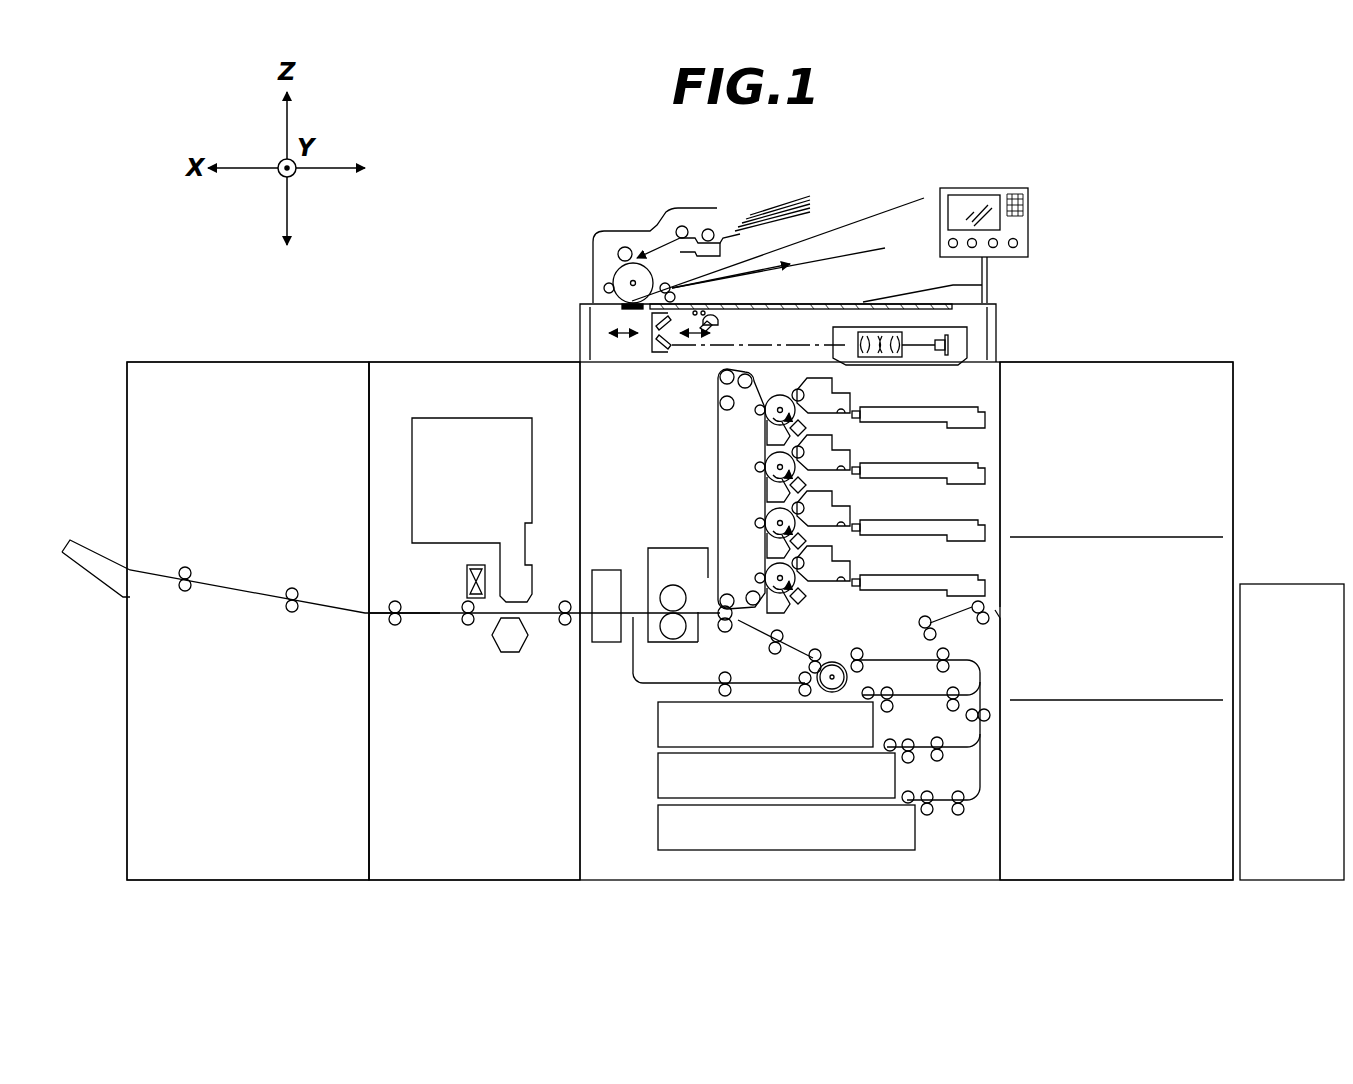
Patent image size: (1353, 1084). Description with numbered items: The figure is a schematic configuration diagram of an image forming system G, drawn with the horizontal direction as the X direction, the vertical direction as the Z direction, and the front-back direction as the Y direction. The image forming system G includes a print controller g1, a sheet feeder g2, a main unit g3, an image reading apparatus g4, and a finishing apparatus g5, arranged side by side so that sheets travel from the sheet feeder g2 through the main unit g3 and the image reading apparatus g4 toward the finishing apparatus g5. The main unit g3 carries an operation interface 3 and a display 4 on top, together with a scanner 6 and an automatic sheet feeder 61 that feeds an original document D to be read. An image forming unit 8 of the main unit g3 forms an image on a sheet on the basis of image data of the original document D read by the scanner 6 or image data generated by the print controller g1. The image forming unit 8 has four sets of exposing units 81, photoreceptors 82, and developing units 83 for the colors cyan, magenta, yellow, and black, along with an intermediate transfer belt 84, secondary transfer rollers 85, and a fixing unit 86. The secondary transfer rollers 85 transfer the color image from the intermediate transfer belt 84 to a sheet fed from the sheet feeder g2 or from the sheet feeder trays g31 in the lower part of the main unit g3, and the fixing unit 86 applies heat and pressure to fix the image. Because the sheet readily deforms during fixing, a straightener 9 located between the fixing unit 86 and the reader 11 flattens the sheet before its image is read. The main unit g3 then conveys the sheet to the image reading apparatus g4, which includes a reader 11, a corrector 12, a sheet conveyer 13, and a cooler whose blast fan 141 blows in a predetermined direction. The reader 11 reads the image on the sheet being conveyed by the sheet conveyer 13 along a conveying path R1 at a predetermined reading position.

The image forming system G is at (1030, 130).
The print controller g1 is at (1300, 582).
The sheet feeder g2 is at (1195, 360).
The main unit g3 is at (562, 332).
The image reading apparatus g4 is at (405, 360).
The finishing apparatus g5 is at (165, 360).
The sheet feeder trays g31 is at (737, 857).
The operation interface 3 is at (1028, 217).
The display 4 is at (962, 208).
The scanner 6 is at (598, 333).
The automatic sheet feeder 61 is at (924, 198).
The original document D is at (778, 216).
The image forming unit 8 is at (645, 430).
The straightener 9 is at (608, 570).
The reader 11 is at (466, 432).
The corrector 12 is at (508, 653).
The sheet conveyer 13 is at (437, 628).
The blast fan 141 is at (468, 583).
The conveying path R1 is at (412, 612).
The exposing units 81 is at (990, 478).
The photoreceptors 82 is at (770, 473).
The developing units 83 is at (862, 427).
The intermediate transfer belt 84 is at (716, 422).
The secondary transfer rollers 85 is at (735, 624).
The fixing unit 86 is at (663, 546).